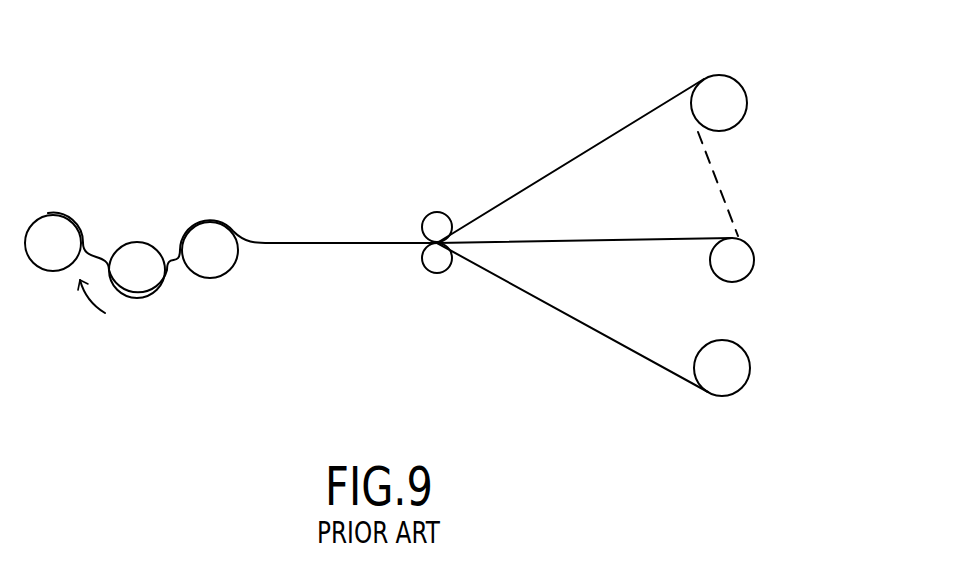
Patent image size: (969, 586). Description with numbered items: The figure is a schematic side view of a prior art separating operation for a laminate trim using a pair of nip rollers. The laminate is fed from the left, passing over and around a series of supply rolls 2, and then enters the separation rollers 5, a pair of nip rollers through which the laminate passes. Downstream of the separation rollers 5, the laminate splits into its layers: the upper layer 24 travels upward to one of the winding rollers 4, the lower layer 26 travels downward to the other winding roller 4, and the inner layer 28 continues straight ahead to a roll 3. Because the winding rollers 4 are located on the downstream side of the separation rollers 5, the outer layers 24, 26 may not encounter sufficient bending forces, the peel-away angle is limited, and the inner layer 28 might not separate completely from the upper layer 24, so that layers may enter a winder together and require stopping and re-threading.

The supply rolls 2 is at (140, 243).
The roll 3 is at (753, 255).
The winding rollers 4 is at (732, 78).
The separation rollers 5 is at (427, 272).
The upper layer 24 is at (570, 158).
The lower layer 26 is at (557, 307).
The inner layer 28 is at (710, 170).